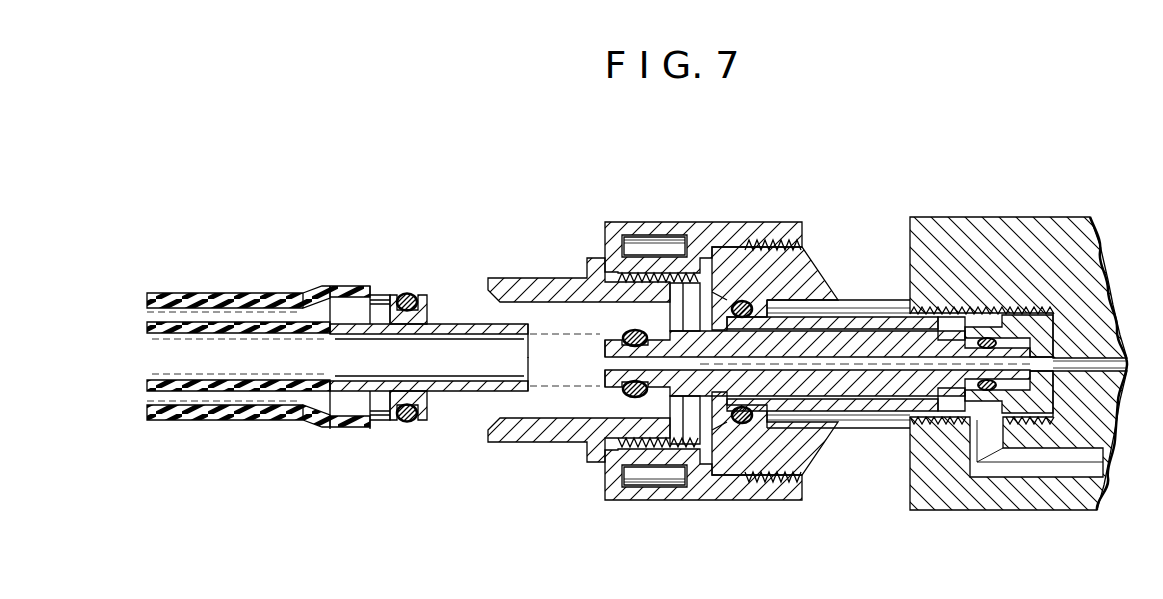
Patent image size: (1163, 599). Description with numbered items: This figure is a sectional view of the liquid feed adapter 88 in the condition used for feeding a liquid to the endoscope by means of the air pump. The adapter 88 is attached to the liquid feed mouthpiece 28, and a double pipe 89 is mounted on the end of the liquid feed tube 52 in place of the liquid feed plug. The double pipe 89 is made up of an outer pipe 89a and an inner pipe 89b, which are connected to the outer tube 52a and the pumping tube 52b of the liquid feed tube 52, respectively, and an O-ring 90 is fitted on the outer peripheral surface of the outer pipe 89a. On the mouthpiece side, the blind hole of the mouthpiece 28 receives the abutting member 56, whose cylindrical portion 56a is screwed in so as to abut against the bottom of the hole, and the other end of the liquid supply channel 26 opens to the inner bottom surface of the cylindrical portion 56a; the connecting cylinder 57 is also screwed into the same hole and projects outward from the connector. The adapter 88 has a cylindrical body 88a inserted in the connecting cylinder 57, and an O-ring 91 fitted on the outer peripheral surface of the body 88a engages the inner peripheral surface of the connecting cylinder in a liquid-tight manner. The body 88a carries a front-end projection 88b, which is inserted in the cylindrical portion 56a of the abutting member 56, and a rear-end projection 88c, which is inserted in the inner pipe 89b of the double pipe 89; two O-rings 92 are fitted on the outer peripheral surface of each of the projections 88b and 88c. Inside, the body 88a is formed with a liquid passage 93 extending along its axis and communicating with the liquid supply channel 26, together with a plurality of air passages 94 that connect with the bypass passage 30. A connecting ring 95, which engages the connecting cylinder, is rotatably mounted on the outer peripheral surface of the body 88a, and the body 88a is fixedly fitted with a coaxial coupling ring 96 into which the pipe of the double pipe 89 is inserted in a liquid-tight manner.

The liquid feed tube 52 is at (258, 327).
The outer tube 52a is at (232, 300).
The pumping tube 52b is at (232, 386).
The double pipe 89 is at (429, 344).
The outer pipe 89a is at (390, 422).
The inner pipe 89b is at (458, 393).
The O-ring 90 is at (405, 293).
The coupling ring 96 is at (537, 283).
The liquid feed adapter 88 is at (699, 384).
The cylindrical body 88a is at (838, 333).
The front-end projection 88b is at (1002, 340).
The rear-end projection 88c is at (606, 346).
The connecting ring 95 is at (652, 230).
The connecting cylinder 57 is at (800, 262).
The O-ring 91 is at (740, 300).
The liquid feed mouthpiece 28 is at (1011, 321).
The air passages 94 is at (887, 312).
The liquid passage 93 is at (870, 368).
The O-rings 92 is at (626, 398).
The abutting member 56 is at (1040, 333).
The cylindrical portion 56a is at (973, 333).
The liquid supply channel 26 is at (1117, 382).
The bypass passage 30 is at (1107, 473).